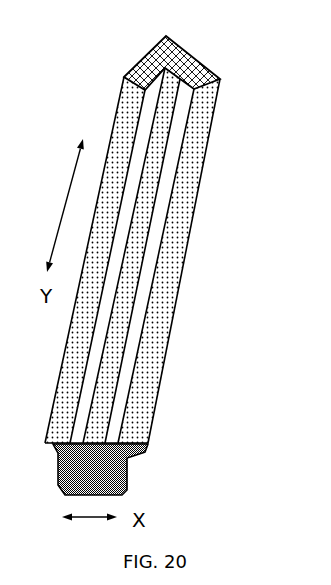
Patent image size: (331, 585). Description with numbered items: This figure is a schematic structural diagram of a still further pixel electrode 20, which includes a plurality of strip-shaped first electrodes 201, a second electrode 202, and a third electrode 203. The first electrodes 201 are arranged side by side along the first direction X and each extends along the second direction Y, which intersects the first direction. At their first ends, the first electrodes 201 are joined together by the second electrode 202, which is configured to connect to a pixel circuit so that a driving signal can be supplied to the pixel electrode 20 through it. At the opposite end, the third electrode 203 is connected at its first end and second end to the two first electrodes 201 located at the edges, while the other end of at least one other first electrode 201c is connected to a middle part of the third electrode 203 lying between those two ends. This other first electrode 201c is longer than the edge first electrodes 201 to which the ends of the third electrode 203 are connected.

The pixel electrode 20 is at (160, 256).
The first electrode 201 is at (248, 222).
The other first electrode 201c is at (156, 194).
The third electrode 203 is at (208, 55).
The second electrode 202 is at (138, 475).